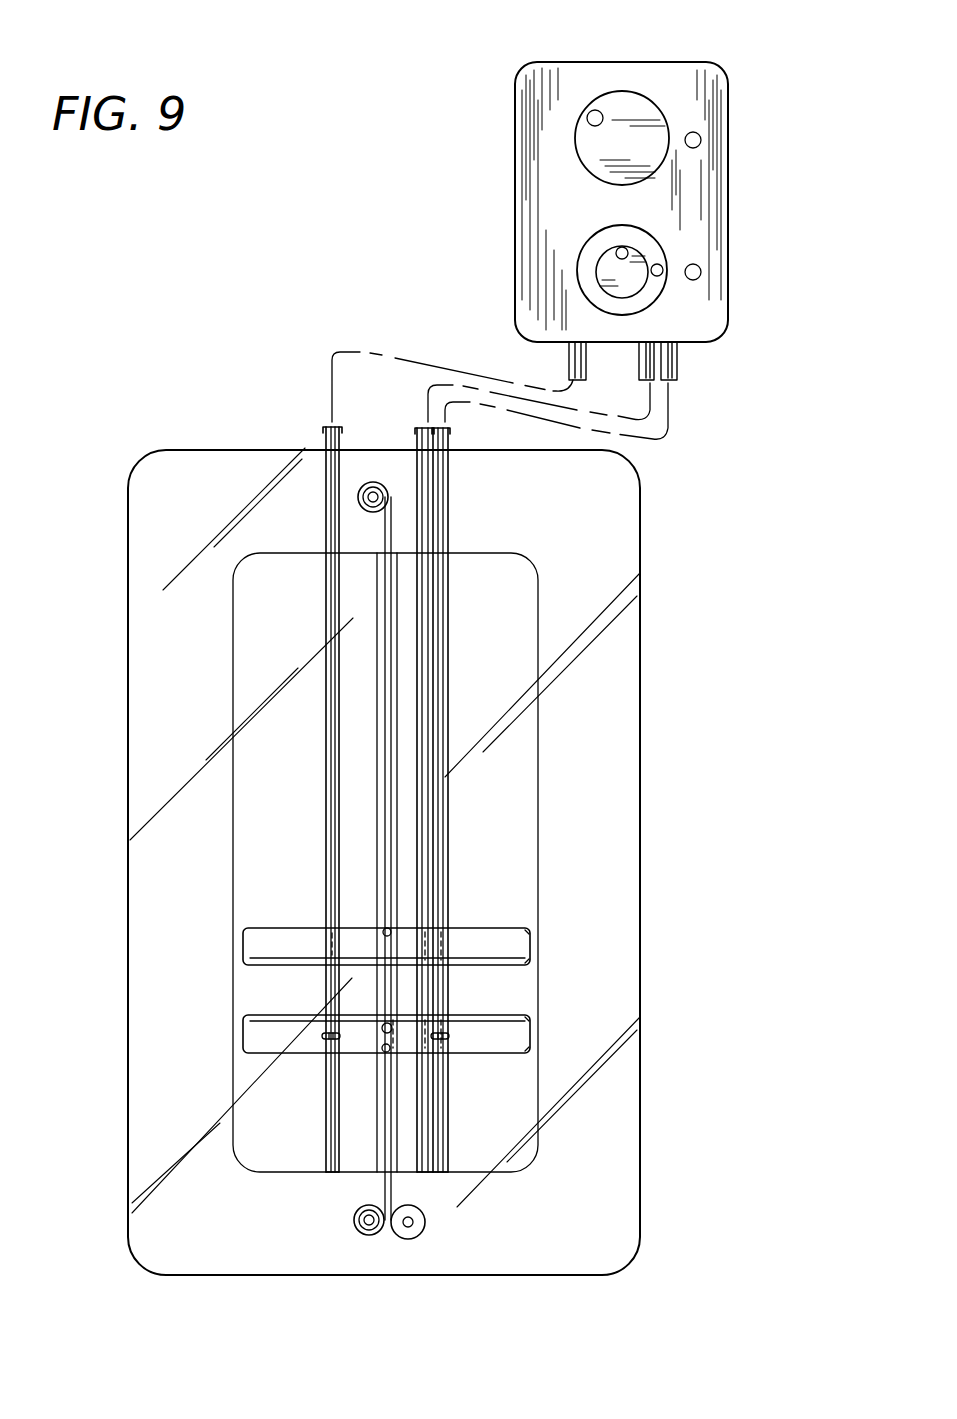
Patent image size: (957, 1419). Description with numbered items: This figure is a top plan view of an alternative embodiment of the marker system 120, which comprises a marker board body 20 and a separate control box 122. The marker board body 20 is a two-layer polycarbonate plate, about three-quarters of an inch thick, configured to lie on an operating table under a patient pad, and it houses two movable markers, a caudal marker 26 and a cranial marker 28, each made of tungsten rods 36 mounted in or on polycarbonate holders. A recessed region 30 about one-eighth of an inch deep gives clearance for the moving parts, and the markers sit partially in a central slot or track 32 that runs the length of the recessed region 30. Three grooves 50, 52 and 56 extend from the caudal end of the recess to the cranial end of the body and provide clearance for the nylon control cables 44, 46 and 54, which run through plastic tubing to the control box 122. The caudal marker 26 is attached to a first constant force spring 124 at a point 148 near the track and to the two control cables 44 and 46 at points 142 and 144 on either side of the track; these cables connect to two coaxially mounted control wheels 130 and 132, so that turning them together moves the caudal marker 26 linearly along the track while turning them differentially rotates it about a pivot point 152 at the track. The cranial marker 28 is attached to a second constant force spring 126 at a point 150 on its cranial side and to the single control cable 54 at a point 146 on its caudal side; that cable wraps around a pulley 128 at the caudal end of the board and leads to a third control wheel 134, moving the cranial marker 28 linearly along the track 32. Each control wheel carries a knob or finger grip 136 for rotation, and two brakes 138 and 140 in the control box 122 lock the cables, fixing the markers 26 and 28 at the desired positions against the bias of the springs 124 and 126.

The marker board body 20 is at (575, 511).
The caudal marker 26 is at (518, 1043).
The cranial marker 28 is at (508, 942).
The recessed region 30 is at (232, 642).
The central slot or track 32 is at (384, 770).
The tungsten rods 36 is at (512, 967).
The control cable 44 is at (327, 700).
The control cable 46 is at (443, 593).
The groove 50 is at (332, 1170).
The groove 52 is at (436, 1160).
The control cable 54 is at (428, 652).
The groove 56 is at (432, 1180).
The marker system 120 is at (288, 406).
The control box 122 is at (697, 320).
The first constant force spring 124 is at (368, 1236).
The second constant force spring 126 is at (368, 483).
The pulley 128 is at (412, 1240).
The control wheel 130 is at (633, 240).
The control wheel 132 is at (610, 270).
The control wheel 134 is at (632, 132).
The knob or finger grip 136 is at (595, 110).
The brake 138 is at (700, 268).
The brake 140 is at (693, 138).
The cable attachment point 142 is at (324, 1039).
The cable attachment point 144 is at (447, 1039).
The cable attachment point 146 is at (393, 957).
The spring attachment point 148 is at (384, 1050).
The spring attachment point 150 is at (387, 929).
The pivot point 152 is at (380, 1020).